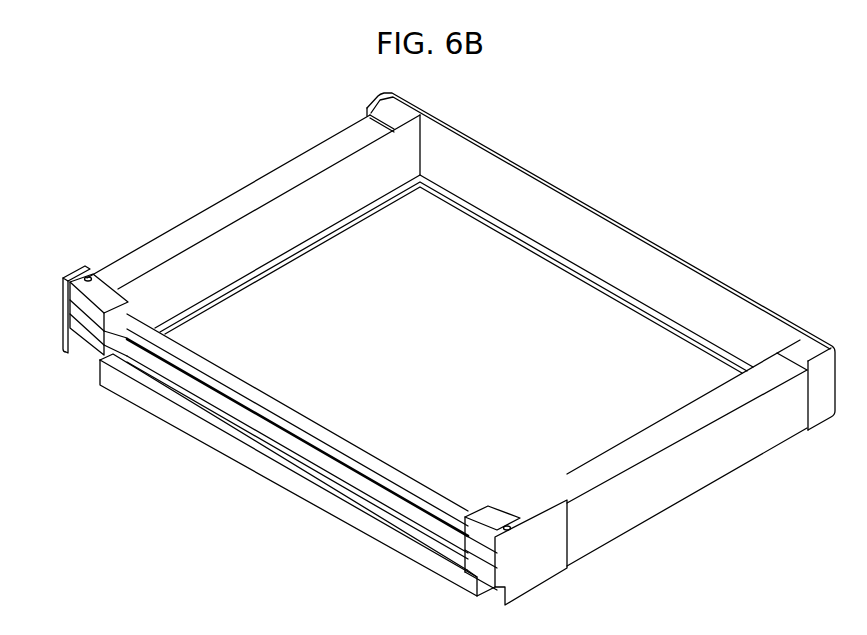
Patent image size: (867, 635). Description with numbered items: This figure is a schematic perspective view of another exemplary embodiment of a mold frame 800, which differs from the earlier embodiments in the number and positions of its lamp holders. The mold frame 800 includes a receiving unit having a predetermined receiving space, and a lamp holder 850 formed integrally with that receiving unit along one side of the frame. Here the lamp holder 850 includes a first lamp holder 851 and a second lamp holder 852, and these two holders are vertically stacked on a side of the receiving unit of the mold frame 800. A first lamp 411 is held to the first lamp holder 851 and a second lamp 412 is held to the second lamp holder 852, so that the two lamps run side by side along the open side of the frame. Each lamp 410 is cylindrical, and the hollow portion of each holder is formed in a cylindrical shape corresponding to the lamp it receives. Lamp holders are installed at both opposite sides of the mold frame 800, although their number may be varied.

The mold frame 800 is at (647, 212).
The lamp holder 850 is at (50, 196).
The first lamp holder 851 is at (104, 294).
The second lamp holder 852 is at (67, 335).
The lamp 410 is at (142, 462).
The first lamp 411 is at (332, 440).
The second lamp 412 is at (262, 428).